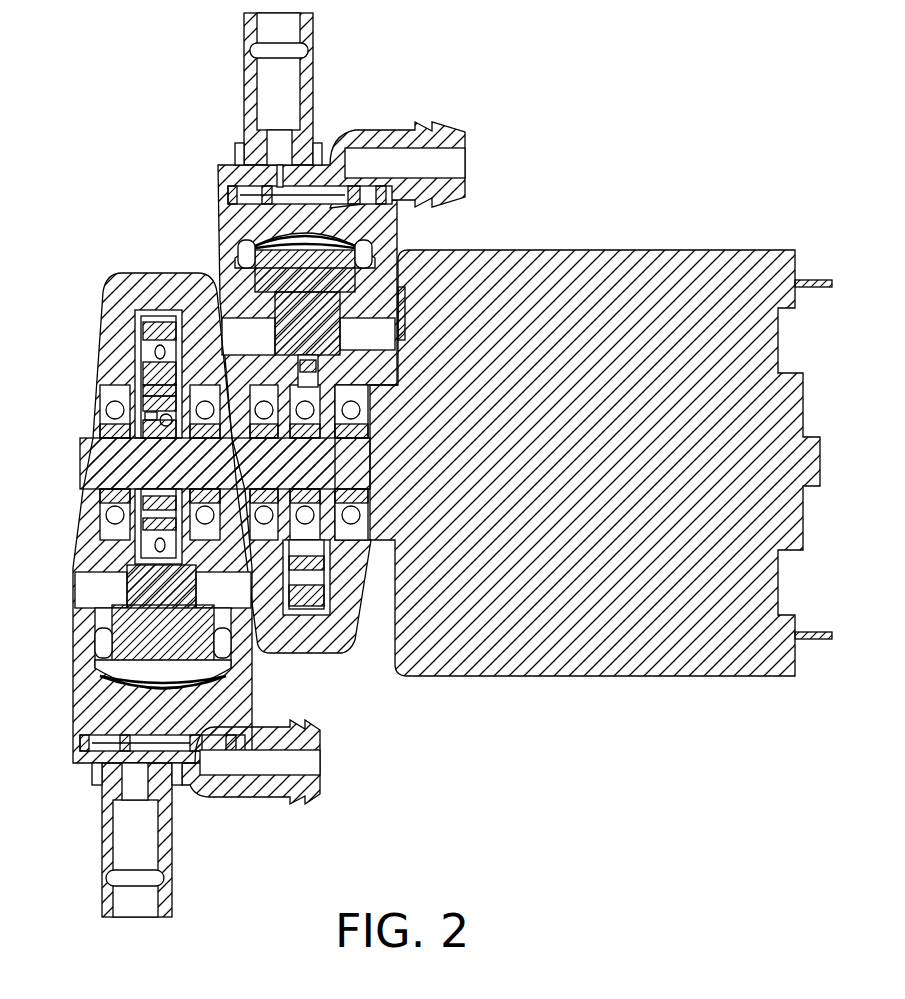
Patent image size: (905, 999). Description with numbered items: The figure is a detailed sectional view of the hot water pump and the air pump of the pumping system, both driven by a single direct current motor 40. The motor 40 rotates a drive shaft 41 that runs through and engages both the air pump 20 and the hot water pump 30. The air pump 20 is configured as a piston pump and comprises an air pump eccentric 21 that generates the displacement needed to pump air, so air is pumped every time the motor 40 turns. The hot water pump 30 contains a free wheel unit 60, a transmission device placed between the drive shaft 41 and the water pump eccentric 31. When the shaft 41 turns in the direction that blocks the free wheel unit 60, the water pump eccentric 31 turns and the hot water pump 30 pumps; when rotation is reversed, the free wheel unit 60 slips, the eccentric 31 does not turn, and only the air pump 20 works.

The air pump 20 is at (345, 653).
The air pump eccentric 21 is at (327, 387).
The hot water pump 30 is at (73, 575).
The water pump eccentric 31 is at (152, 387).
The motor 40 is at (608, 472).
The drive shaft 41 is at (88, 462).
The free wheel unit 60 is at (148, 410).